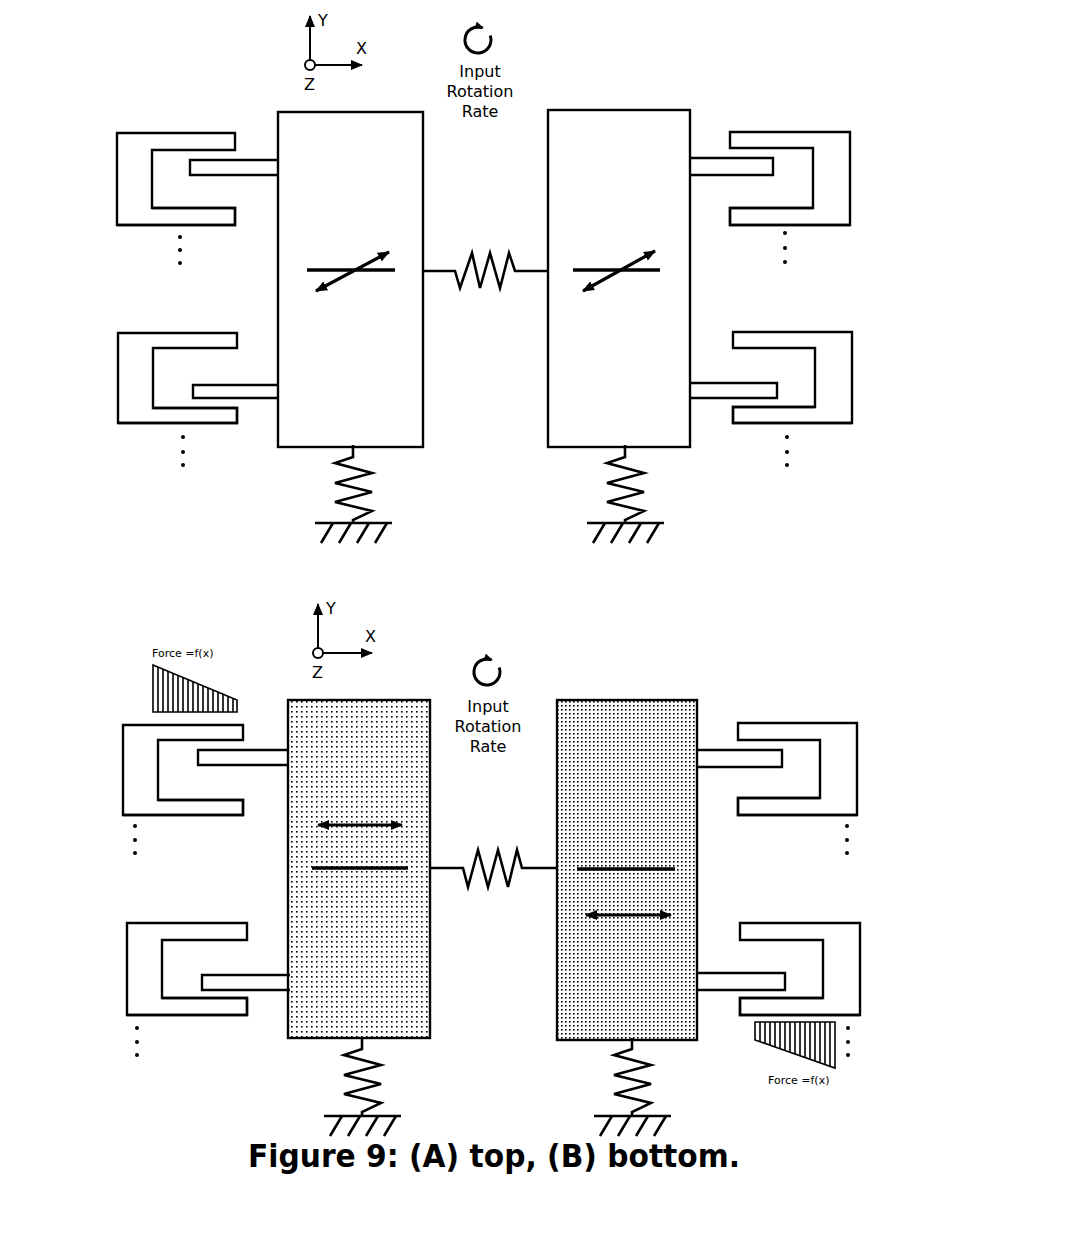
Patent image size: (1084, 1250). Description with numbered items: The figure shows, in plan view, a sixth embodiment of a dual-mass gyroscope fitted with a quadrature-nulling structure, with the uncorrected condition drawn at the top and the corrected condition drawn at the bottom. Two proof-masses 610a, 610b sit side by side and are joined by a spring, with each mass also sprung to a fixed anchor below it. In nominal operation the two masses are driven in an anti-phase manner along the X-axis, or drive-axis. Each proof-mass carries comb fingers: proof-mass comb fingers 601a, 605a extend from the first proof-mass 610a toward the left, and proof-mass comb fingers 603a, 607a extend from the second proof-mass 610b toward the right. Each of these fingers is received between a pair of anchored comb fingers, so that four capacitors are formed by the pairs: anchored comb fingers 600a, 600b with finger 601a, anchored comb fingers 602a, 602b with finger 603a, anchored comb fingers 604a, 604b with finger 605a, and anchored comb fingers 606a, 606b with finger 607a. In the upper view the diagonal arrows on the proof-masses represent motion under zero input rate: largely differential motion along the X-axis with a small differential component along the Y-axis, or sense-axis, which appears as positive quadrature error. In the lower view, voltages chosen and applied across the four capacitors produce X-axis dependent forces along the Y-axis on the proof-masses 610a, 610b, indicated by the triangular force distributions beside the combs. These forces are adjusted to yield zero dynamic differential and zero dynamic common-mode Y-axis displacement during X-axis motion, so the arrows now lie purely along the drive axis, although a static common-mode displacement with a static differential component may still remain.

In FIG. 9A, the anchored comb finger 600a is at (185, 142).
In FIG. 9B, the anchored comb finger 600a is at (185, 730).
In FIG. 9A, the anchored comb finger 600b is at (185, 222).
In FIG. 9B, the anchored comb finger 600b is at (190, 810).
In FIG. 9A, the proof-mass comb finger 601a is at (263, 167).
In FIG. 9B, the proof-mass comb finger 601a is at (277, 755).
In FIG. 9A, the anchored comb finger 602a is at (797, 138).
In FIG. 9B, the anchored comb finger 602a is at (800, 728).
In FIG. 9A, the anchored comb finger 602b is at (797, 218).
In FIG. 9B, the anchored comb finger 602b is at (777, 807).
In FIG. 9A, the proof-mass comb finger 603a is at (702, 167).
In FIG. 9B, the proof-mass comb finger 603a is at (703, 755).
In FIG. 9A, the anchored comb finger 604a is at (173, 340).
In FIG. 9B, the anchored comb finger 604a is at (177, 930).
In FIG. 9A, the anchored comb finger 604b is at (172, 420).
In FIG. 9B, the anchored comb finger 604b is at (178, 1007).
In FIG. 9A, the proof-mass comb finger 605a is at (275, 387).
In FIG. 9B, the proof-mass comb finger 605a is at (278, 982).
In FIG. 9A, the anchored comb finger 606a is at (787, 337).
In FIG. 9B, the anchored comb finger 606a is at (790, 925).
In FIG. 9A, the anchored comb finger 606b is at (787, 417).
In FIG. 9B, the anchored comb finger 606b is at (790, 1008).
In FIG. 9A, the proof-mass comb finger 607a is at (700, 387).
In FIG. 9B, the proof-mass comb finger 607a is at (703, 975).
In FIG. 9A, the proof-mass 610a is at (335, 127).
In FIG. 9B, the proof-mass 610a is at (338, 715).
In FIG. 9A, the proof-mass 610b is at (650, 123).
In FIG. 9B, the proof-mass 610b is at (653, 712).